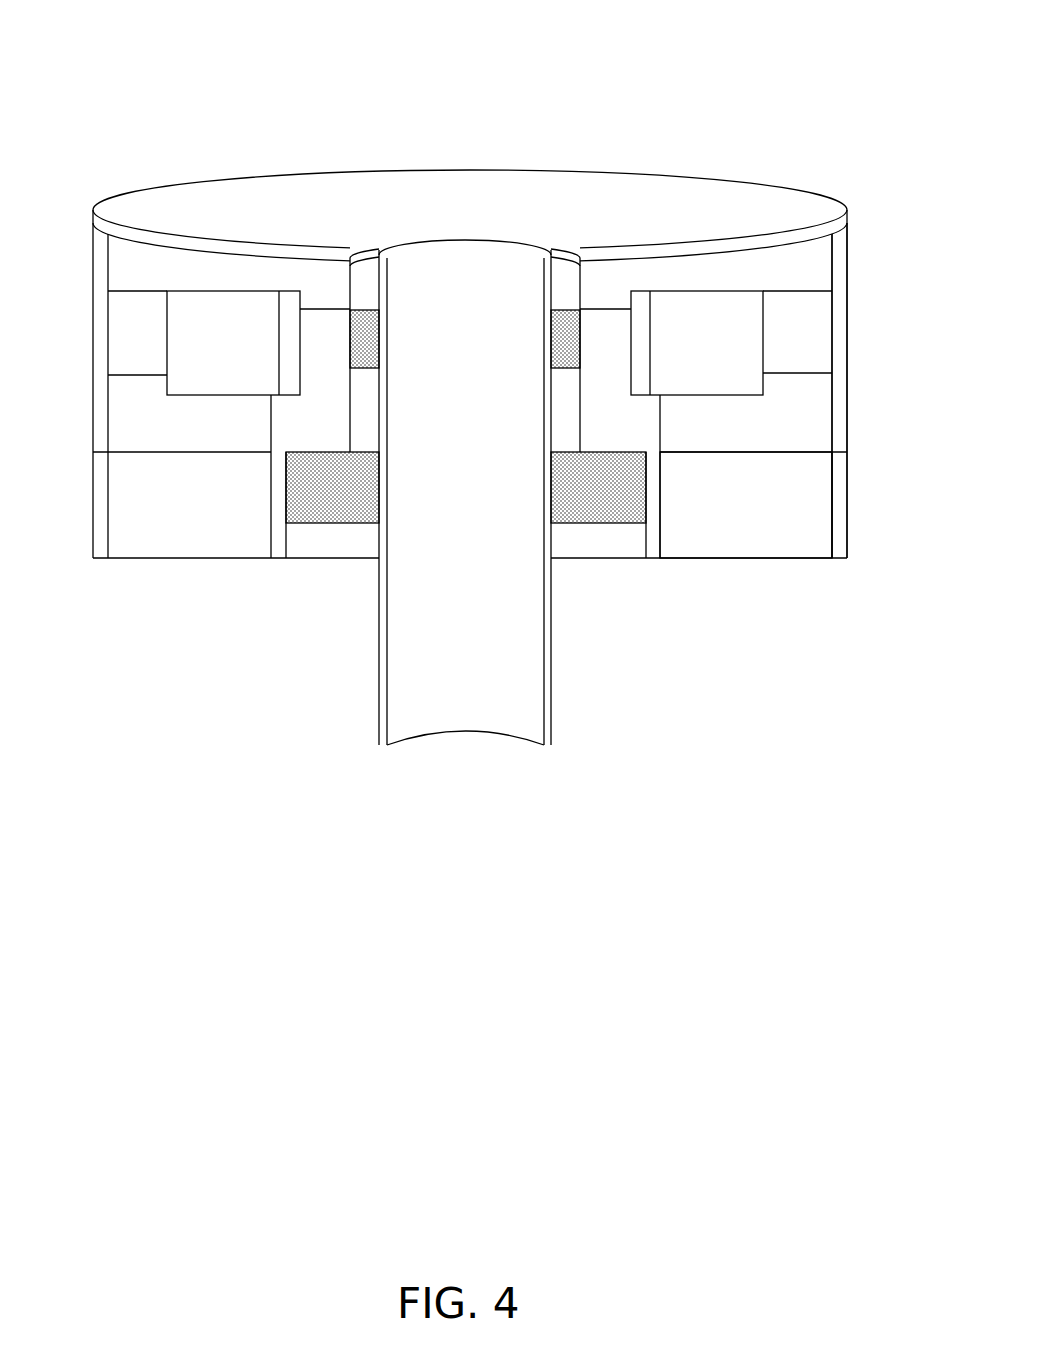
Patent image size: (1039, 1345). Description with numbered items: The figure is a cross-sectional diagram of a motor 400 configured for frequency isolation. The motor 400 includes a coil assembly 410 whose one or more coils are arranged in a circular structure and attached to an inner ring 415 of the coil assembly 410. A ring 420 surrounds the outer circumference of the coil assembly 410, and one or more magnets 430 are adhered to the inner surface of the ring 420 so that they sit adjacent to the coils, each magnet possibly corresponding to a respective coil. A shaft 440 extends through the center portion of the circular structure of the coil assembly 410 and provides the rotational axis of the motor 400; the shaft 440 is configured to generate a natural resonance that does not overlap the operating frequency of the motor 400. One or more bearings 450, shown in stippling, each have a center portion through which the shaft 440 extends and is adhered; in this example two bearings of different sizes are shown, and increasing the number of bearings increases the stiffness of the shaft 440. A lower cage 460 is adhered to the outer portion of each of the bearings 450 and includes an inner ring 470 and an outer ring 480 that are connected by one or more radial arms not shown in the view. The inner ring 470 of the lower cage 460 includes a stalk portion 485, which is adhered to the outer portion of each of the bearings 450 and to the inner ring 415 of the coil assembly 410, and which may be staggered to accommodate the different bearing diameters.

The motor 400 is at (176, 54).
The coil assembly 410 is at (718, 345).
The inner ring 415 is at (642, 302).
The ring 420 is at (838, 365).
The magnets 430 is at (122, 331).
The shaft 440 is at (458, 268).
The bearings 450 is at (366, 350).
The lower cage 460 is at (765, 527).
The inner ring 470 is at (655, 545).
The outer ring 480 is at (838, 515).
The stalk portion 485 is at (285, 428).